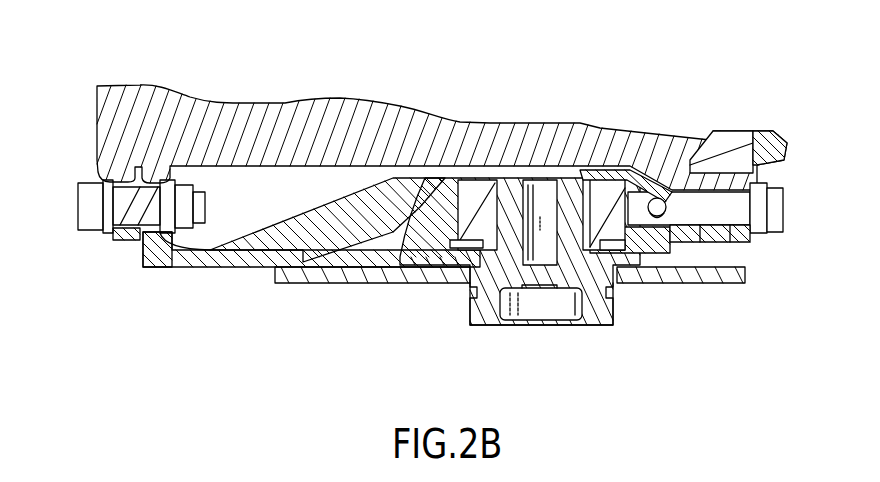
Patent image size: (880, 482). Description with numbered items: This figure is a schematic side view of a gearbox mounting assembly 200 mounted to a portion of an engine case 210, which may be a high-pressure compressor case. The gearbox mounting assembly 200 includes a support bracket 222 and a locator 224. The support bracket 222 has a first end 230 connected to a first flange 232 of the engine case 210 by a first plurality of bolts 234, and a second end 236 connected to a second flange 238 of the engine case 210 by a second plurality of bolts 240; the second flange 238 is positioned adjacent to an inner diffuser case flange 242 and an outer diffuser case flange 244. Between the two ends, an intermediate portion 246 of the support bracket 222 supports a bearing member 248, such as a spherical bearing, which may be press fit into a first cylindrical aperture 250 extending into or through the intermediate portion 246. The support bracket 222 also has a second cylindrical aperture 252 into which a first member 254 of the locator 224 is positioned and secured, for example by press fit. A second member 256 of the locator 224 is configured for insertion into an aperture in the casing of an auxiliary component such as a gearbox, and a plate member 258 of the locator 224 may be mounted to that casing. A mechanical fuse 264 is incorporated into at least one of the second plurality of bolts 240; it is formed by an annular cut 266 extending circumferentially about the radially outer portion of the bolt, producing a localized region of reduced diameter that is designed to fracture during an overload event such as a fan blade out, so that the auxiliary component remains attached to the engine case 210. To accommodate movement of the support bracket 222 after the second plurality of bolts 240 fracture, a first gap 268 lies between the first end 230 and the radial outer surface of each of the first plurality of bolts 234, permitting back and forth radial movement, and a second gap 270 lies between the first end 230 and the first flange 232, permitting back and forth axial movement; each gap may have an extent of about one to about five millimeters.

The gearbox mounting assembly 200 is at (60, 82).
The engine case 210 is at (387, 101).
The support bracket 222 is at (170, 260).
The locator 224 is at (600, 310).
The first end 230 is at (143, 258).
The first flange 232 is at (123, 242).
The first plurality of bolts 234 is at (88, 197).
The second end 236 is at (645, 253).
The second flange 238 is at (690, 240).
The second plurality of bolts 240 is at (780, 205).
The inner diffuser case flange 242 is at (713, 132).
The outer diffuser case flange 244 is at (752, 140).
The intermediate portion 246 is at (405, 248).
The bearing member 248 is at (467, 187).
The first cylindrical aperture 250 is at (452, 253).
The second cylindrical aperture 252 is at (540, 180).
The first member 254 is at (575, 192).
The second member 256 is at (497, 298).
The plate member 258 is at (305, 278).
The mechanical fuse 264 is at (660, 197).
The annular cut 266 is at (653, 192).
The first gap 268 is at (170, 177).
The second gap 270 is at (147, 177).